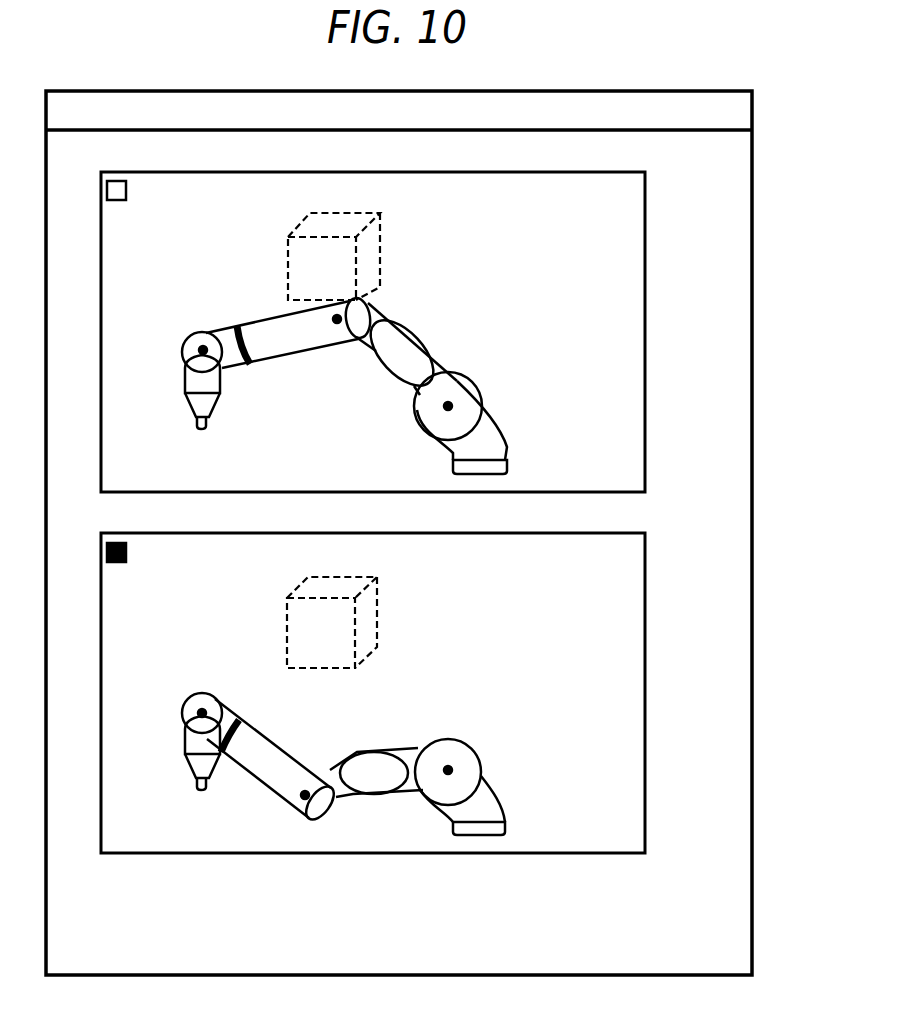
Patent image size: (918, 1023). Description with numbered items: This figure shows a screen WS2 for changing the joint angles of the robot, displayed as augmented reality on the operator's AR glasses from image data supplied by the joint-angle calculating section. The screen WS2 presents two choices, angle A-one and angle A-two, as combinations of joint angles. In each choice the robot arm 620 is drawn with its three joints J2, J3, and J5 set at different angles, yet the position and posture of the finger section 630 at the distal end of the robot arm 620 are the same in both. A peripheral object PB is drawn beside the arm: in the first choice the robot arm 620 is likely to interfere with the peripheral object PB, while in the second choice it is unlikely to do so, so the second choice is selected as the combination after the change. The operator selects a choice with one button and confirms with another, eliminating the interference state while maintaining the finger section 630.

The screen WS2 is at (592, 90).
The peripheral object PB is at (353, 210).
The joint J5 is at (203, 346).
The joint J3 is at (359, 311).
The joint J2 is at (452, 406).
The robot arm 620 is at (443, 360).
The finger section 630 is at (183, 377).